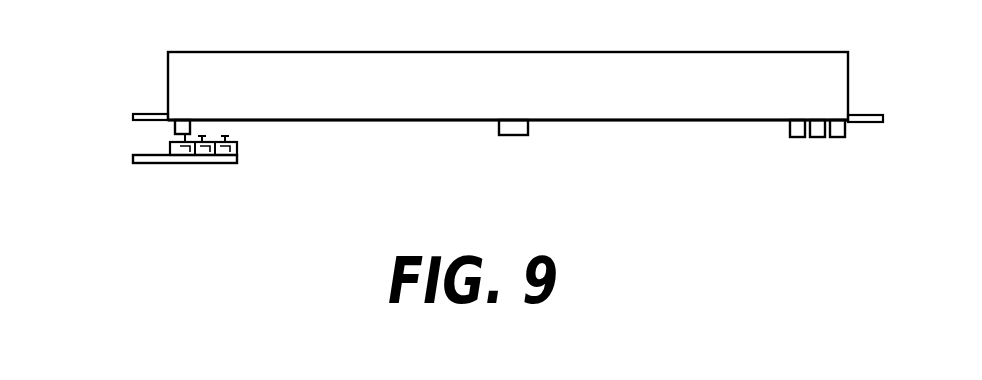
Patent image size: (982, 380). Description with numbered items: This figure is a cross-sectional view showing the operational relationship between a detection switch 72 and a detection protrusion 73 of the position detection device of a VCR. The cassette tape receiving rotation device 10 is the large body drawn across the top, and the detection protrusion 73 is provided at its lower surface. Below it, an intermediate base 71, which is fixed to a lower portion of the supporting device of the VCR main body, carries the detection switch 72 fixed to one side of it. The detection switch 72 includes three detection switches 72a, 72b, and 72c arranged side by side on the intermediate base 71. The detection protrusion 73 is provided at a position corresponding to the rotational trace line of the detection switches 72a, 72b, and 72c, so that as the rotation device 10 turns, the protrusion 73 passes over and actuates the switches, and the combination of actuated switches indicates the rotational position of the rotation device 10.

The cassette tape receiving rotation device 10 is at (279, 53).
The intermediate base 71 is at (149, 165).
The detection switch 72 is at (174, 141).
The detection switch 72a is at (178, 153).
The detection switch 72b is at (203, 153).
The detection switch 72c is at (237, 153).
The detection protrusion 73 is at (174, 124).